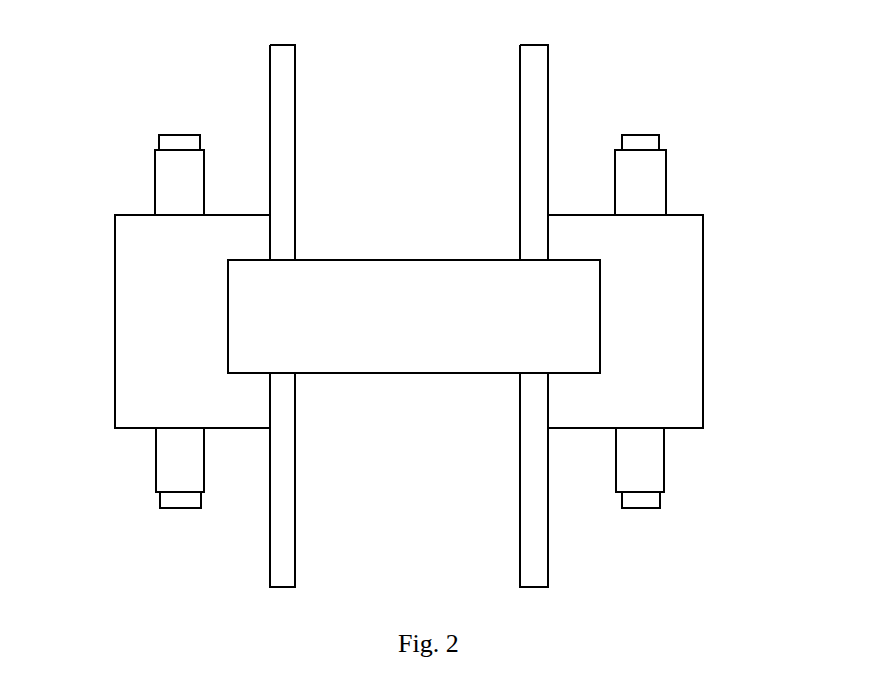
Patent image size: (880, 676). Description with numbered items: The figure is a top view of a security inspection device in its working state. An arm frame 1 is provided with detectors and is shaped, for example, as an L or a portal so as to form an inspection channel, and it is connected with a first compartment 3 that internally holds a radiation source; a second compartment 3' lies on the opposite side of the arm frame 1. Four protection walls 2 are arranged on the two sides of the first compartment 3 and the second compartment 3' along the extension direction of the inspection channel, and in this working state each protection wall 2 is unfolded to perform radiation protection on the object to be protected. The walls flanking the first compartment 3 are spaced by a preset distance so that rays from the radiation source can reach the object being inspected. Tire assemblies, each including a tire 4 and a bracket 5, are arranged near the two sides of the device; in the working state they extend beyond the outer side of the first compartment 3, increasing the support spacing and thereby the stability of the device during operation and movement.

The arm frame 1 is at (555, 322).
The protection wall 2 is at (528, 173).
The first compartment 3 is at (152, 341).
The second compartment 3' is at (663, 321).
The tire 4 is at (176, 145).
The bracket 5 is at (635, 475).